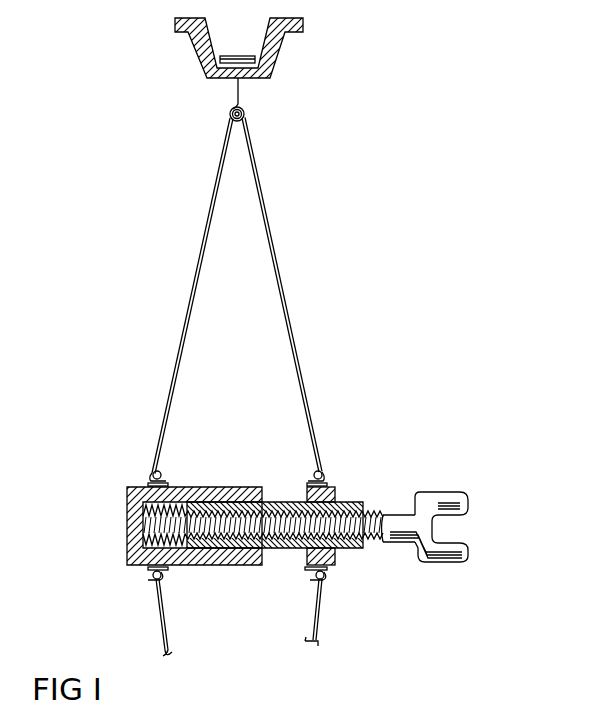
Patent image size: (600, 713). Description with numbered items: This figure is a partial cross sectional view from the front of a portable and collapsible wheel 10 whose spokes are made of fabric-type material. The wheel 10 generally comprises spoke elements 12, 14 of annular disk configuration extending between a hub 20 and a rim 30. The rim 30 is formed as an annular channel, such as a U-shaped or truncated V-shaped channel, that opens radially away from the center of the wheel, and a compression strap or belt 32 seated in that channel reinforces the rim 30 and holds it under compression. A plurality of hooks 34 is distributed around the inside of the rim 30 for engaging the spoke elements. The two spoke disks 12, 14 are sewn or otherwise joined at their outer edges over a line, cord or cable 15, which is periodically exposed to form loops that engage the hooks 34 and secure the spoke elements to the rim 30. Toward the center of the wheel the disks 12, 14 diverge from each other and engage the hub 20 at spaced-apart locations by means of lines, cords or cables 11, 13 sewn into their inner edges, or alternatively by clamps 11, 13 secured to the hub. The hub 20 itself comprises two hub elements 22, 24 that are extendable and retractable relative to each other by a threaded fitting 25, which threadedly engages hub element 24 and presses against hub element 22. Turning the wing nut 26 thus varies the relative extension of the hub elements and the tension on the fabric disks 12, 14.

The portable and collapsible wheel 10 is at (458, 112).
The line, cord or cable 11 is at (314, 473).
The spoke element 12 is at (297, 328).
The line, cord or cable 13 is at (161, 472).
The spoke element 14 is at (182, 328).
The line, cord or cable 15 is at (244, 114).
The hub 20 is at (103, 533).
The hub element 22 is at (130, 565).
The hub element 24 is at (337, 557).
The threaded fitting 25 is at (397, 517).
The wing nut 26 is at (462, 558).
The rim 30 is at (282, 50).
The compression strap or belt 32 is at (233, 55).
The hooks 34 is at (240, 92).